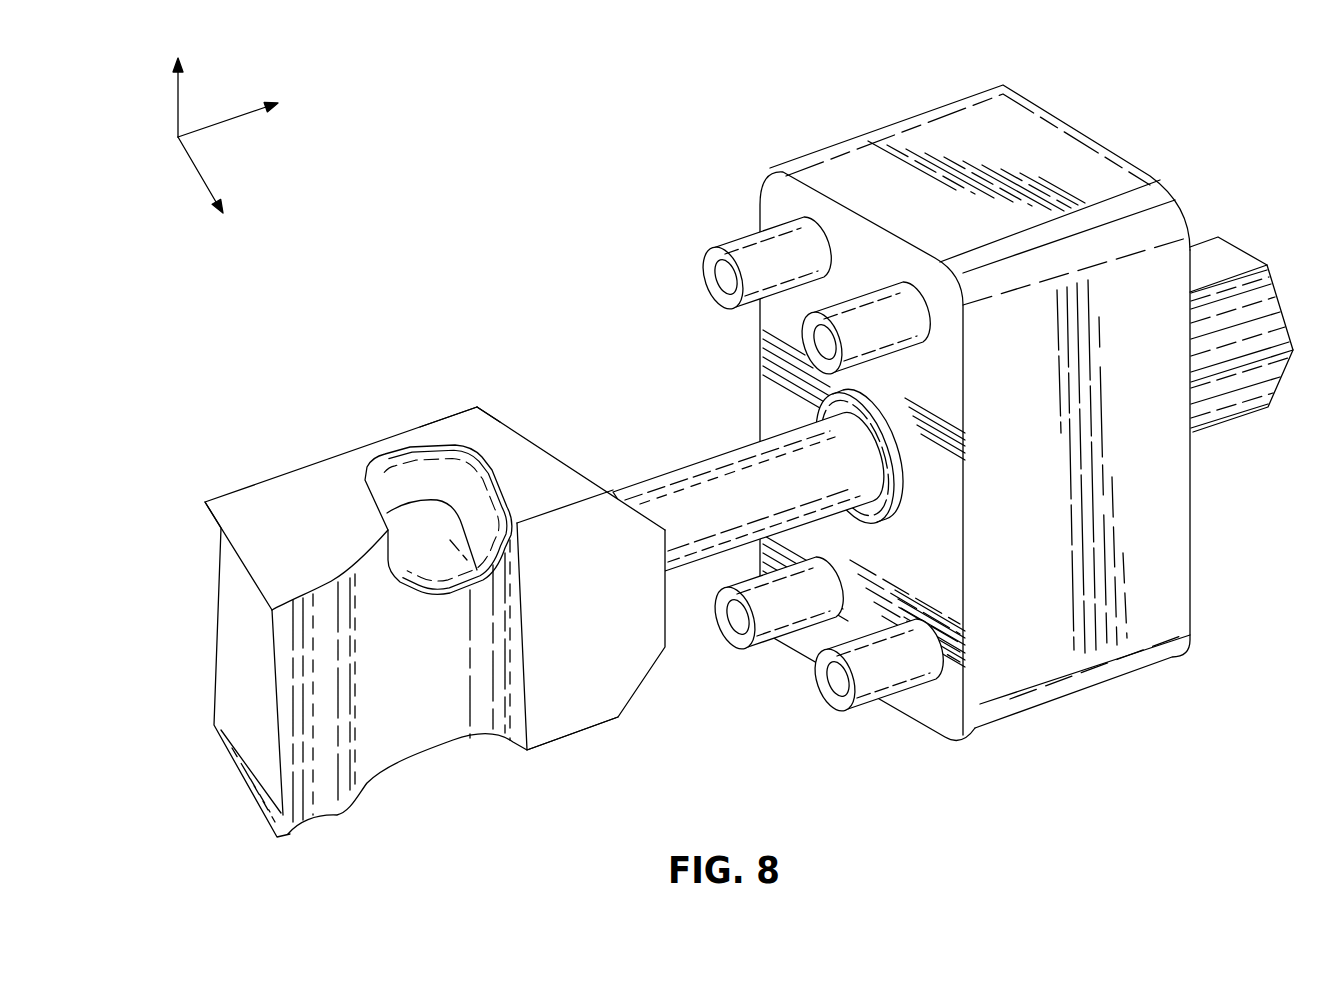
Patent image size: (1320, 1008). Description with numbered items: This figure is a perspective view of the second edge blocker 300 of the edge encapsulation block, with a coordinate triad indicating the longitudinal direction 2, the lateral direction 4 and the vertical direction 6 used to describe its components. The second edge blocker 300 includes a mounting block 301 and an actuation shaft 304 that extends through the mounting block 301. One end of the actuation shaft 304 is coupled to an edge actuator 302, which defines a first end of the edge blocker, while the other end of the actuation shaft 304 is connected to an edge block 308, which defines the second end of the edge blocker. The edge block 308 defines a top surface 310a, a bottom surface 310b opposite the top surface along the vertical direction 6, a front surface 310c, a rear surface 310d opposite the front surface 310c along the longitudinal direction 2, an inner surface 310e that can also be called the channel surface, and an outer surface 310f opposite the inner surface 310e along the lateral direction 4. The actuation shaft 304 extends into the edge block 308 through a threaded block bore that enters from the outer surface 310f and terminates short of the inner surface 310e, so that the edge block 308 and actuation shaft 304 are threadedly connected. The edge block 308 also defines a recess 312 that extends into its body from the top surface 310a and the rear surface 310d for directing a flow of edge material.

The second edge blocker 300 is at (511, 106).
The mounting block 301 is at (887, 150).
The edge actuator 302 is at (1232, 258).
The actuation shaft 304 is at (700, 468).
The edge block 308 is at (243, 486).
The top surface 310a is at (275, 538).
The bottom surface 310b is at (610, 717).
The front surface 310c is at (453, 408).
The rear surface 310d is at (575, 614).
The inner surface 310e is at (233, 635).
The outer surface 310f is at (517, 432).
The recess 312 is at (412, 500).
The longitudinal direction 2 is at (200, 175).
The lateral direction 4 is at (228, 124).
The vertical direction 6 is at (184, 97).